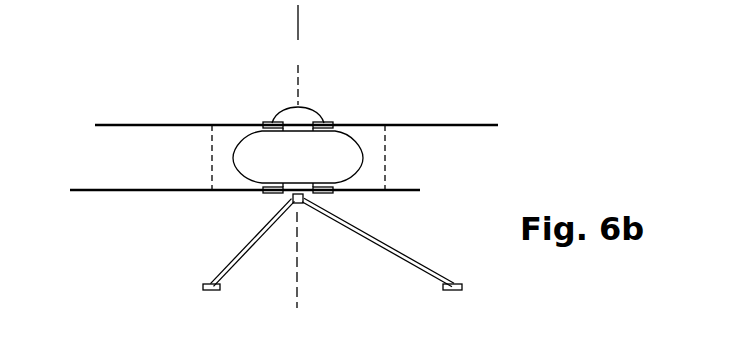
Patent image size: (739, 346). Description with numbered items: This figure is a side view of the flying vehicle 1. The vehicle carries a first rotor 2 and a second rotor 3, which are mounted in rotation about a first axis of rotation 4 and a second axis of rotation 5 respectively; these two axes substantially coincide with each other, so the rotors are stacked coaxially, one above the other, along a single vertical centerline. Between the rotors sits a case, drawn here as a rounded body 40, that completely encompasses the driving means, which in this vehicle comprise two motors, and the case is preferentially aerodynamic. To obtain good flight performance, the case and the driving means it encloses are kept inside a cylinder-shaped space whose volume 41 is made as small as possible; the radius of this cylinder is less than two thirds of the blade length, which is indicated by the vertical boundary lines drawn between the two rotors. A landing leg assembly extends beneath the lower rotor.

The flying vehicle 1 is at (514, 162).
The first rotor 2 is at (157, 122).
The second rotor 3 is at (133, 191).
The first axis of rotation 4 is at (298, 55).
The second axis of rotation 5 is at (297, 283).
The fuselage body 40 is at (363, 158).
The volume 41 is at (387, 140).